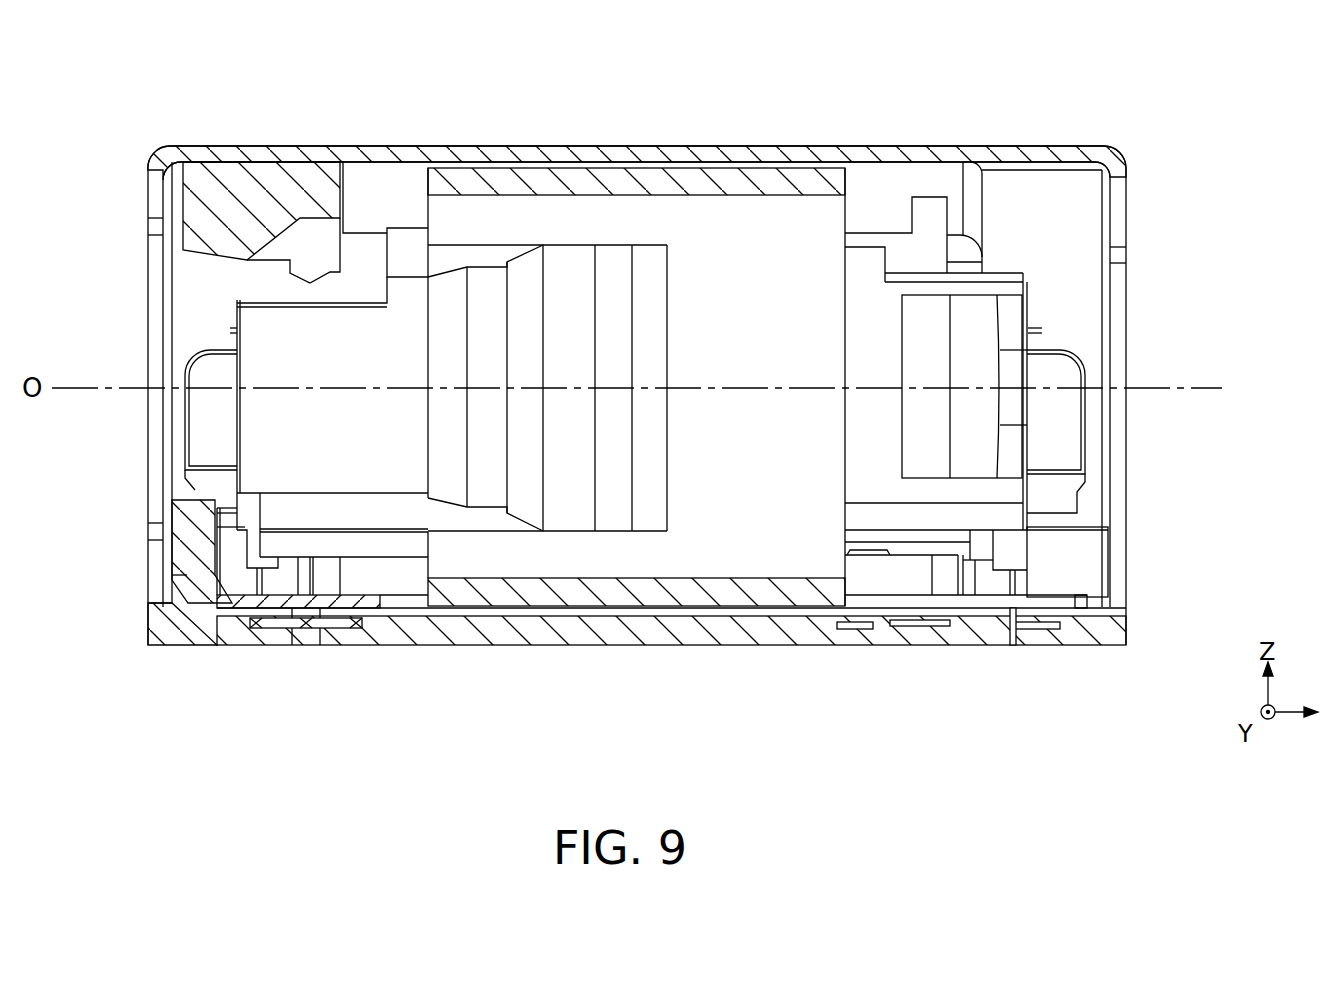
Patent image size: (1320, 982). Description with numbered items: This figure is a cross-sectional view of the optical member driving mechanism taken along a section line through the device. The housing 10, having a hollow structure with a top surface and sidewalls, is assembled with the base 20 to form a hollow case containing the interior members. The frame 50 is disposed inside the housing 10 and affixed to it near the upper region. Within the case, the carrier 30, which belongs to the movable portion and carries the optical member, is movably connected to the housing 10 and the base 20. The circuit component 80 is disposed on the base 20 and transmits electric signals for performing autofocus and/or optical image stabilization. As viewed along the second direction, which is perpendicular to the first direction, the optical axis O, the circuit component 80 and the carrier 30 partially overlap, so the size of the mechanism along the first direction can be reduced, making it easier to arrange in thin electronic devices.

The housing 10 is at (930, 158).
The base 20 is at (706, 632).
The carrier 30 is at (511, 592).
The frame 50 is at (388, 190).
The circuit component 80 is at (243, 600).